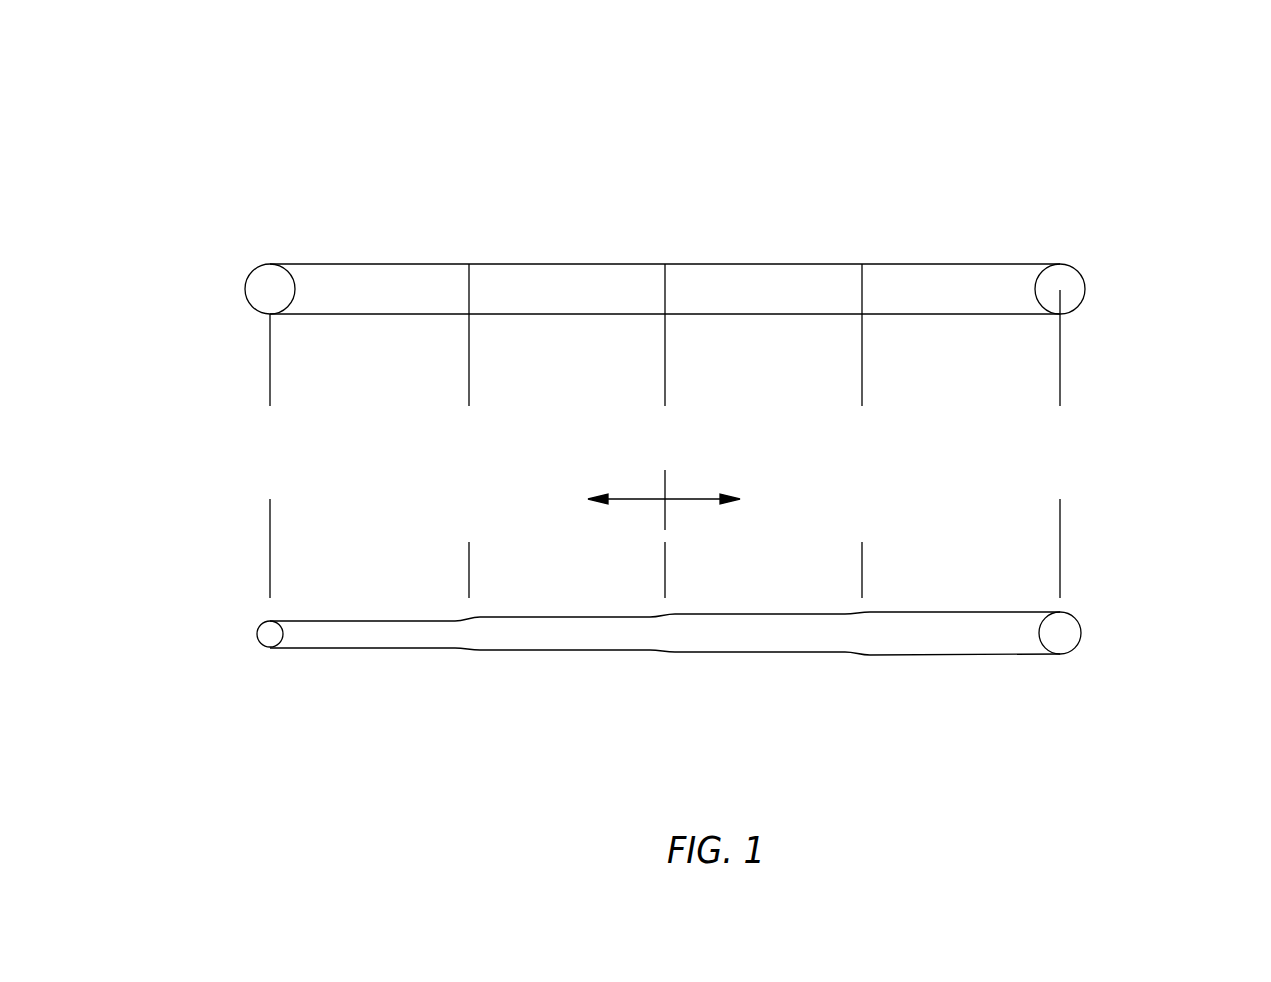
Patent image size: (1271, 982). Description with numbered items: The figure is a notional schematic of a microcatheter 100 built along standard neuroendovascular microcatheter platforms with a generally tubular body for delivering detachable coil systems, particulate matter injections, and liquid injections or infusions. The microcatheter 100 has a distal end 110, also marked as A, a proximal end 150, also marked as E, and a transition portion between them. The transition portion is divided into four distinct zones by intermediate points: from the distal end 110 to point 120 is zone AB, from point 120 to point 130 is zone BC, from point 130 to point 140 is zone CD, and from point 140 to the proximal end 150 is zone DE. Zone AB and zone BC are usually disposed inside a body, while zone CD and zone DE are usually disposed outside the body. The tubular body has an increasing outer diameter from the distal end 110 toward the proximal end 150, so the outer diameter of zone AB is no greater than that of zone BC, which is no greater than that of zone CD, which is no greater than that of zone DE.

The microcatheter 100 is at (672, 391).
The distal end 110 is at (275, 406).
The point B 120 is at (470, 406).
The point C 130 is at (666, 406).
The point D 140 is at (861, 406).
The proximal end 150 is at (1060, 406).